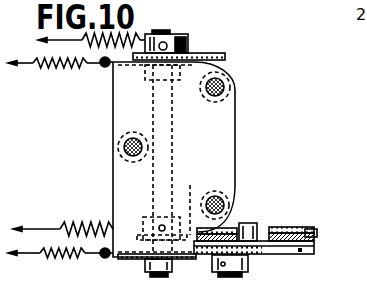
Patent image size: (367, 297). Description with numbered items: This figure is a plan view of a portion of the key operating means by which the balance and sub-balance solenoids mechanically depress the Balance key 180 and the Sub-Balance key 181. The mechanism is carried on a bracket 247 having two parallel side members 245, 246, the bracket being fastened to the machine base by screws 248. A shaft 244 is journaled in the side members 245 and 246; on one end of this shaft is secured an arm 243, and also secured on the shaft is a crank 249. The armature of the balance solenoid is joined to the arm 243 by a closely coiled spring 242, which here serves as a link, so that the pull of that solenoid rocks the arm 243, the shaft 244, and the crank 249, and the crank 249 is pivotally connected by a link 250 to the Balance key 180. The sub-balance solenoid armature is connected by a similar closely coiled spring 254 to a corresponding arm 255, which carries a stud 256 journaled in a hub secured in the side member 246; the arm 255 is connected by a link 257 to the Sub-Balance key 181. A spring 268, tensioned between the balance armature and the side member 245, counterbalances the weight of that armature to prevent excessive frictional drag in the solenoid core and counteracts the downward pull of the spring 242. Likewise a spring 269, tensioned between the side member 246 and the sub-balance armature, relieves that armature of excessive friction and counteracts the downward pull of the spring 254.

The closely coiled spring 242 is at (82, 41).
The spring 268 is at (50, 67).
The side member 245 is at (103, 66).
The arm 243 is at (210, 53).
The shaft 244 is at (188, 42).
The bracket 247 is at (235, 131).
The screws 248 is at (215, 97).
The crank 249 is at (200, 197).
The closely coiled spring 254 is at (75, 221).
The spring 269 is at (64, 249).
The side member 246 is at (104, 259).
The link 250 is at (234, 232).
The Balance key 180 is at (262, 232).
The link 257 is at (301, 232).
The Sub-Balance key 181 is at (317, 236).
The arm 255 is at (301, 255).
The stud 256 is at (243, 277).